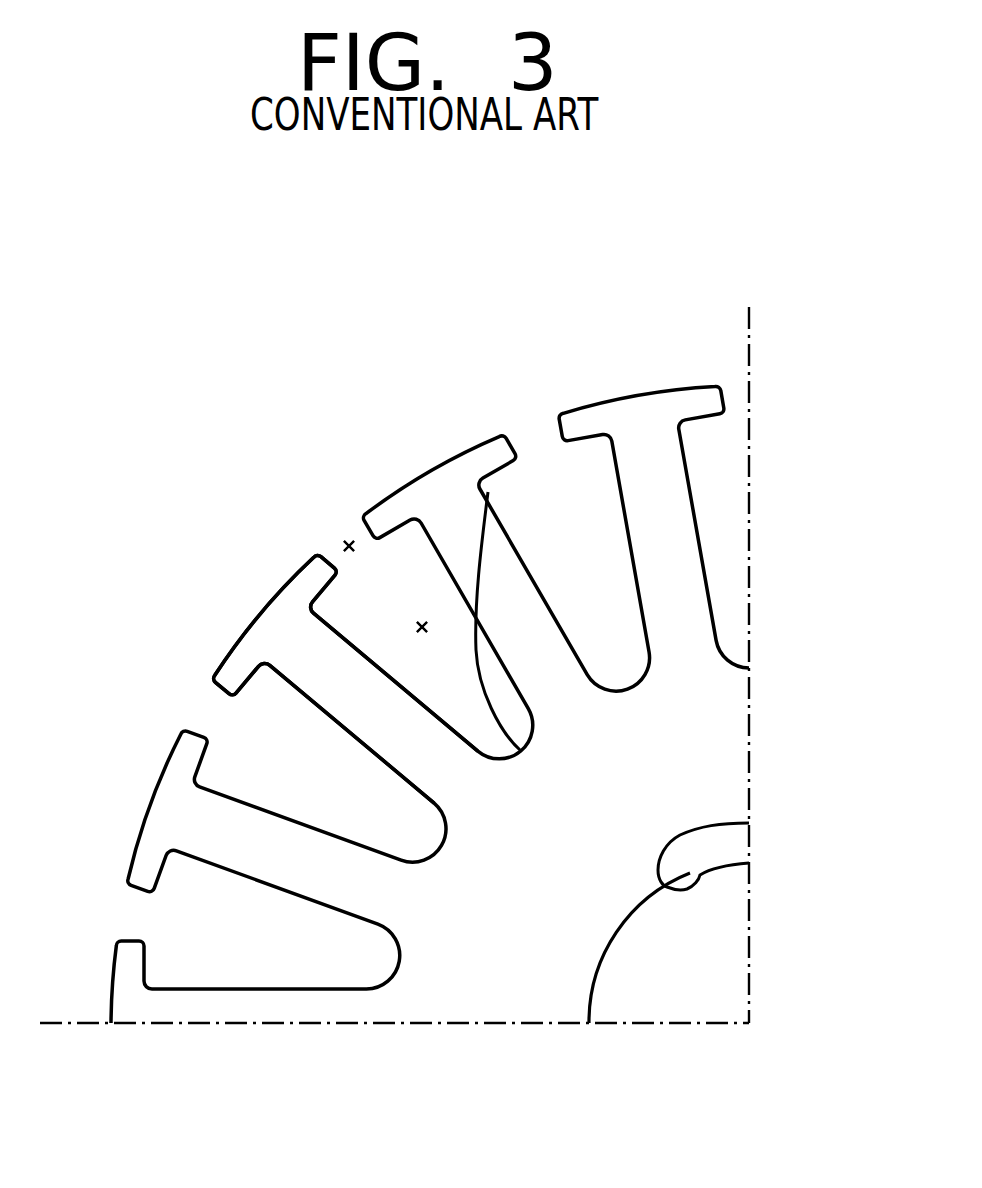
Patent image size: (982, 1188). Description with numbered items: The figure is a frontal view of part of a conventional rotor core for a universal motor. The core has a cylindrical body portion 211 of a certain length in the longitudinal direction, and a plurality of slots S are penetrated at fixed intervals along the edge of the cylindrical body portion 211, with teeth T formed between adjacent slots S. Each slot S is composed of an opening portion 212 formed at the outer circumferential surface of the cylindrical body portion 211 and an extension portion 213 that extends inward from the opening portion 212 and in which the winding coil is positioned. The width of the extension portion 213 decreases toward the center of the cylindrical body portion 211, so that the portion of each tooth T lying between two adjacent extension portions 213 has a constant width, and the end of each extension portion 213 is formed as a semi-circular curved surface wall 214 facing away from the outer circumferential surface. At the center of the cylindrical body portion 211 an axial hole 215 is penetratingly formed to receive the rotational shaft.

The cylindrical body portion 211 is at (718, 747).
The opening portion 212 is at (348, 543).
The extension portion 213 is at (421, 622).
The curved surface wall 214 is at (488, 492).
The axial hole 215 is at (749, 823).
The tooth T is at (322, 730).
The slot S is at (423, 362).